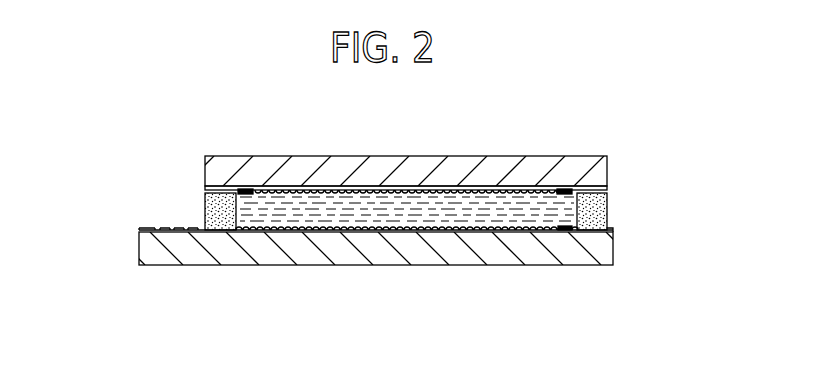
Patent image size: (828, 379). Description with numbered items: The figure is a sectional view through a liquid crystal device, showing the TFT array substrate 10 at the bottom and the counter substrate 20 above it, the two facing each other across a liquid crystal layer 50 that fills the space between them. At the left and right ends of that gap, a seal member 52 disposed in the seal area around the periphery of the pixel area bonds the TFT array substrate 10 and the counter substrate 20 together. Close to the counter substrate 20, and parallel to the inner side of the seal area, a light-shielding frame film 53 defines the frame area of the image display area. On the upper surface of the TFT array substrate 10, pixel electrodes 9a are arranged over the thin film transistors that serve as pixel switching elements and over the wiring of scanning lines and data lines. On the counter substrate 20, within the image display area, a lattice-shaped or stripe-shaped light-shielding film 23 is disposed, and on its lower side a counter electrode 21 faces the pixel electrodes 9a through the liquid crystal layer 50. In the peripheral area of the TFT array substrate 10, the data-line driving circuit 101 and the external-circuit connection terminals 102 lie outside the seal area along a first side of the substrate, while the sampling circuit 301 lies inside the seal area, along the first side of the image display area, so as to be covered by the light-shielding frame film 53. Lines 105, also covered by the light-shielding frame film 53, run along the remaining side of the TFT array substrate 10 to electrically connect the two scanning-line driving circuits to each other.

The TFT array substrate 10 is at (430, 258).
The counter substrate 20 is at (342, 164).
The counter electrode 21 is at (513, 188).
The light-shielding film 23 is at (395, 188).
The liquid crystal layer 50 is at (360, 216).
The seal member 52 is at (208, 214).
The light-shielding frame film 53 is at (244, 191).
The pixel electrodes 9a is at (280, 231).
The data-line driving circuit 101 is at (186, 231).
The external-circuit connection terminals 102 is at (147, 229).
The lines 105 is at (564, 230).
The sampling circuit 301 is at (243, 231).